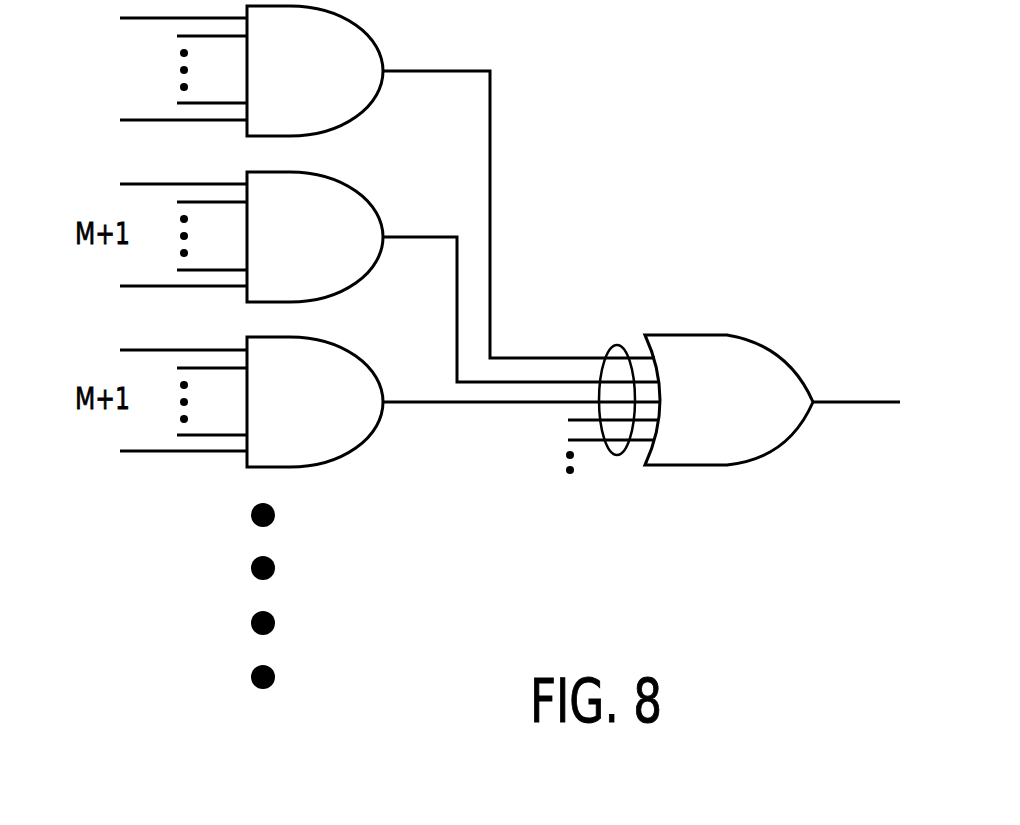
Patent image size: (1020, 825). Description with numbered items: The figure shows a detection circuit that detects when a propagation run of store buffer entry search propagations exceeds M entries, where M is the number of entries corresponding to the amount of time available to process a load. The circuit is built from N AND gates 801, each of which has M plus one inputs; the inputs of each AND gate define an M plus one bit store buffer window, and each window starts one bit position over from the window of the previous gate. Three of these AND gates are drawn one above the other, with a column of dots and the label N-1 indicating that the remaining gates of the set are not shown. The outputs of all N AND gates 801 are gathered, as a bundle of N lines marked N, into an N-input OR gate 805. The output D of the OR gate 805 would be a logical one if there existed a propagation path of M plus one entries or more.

The AND gate 801 is at (335, 88).
The OR gate 805 is at (755, 419).
The bundle of N input lines to OR gate N is at (612, 389).
The output signal D is at (857, 379).
The N-1 additional AND gates (ellipsis) N-1 is at (258, 626).